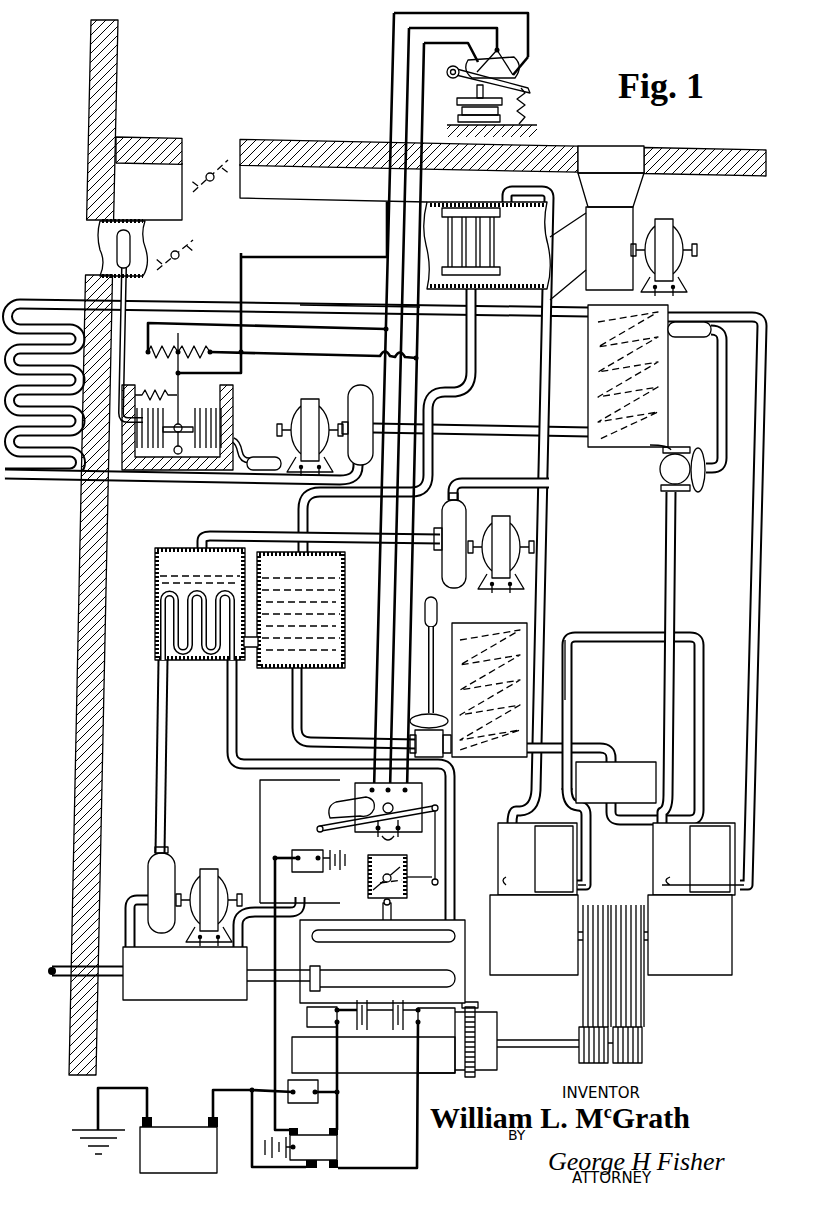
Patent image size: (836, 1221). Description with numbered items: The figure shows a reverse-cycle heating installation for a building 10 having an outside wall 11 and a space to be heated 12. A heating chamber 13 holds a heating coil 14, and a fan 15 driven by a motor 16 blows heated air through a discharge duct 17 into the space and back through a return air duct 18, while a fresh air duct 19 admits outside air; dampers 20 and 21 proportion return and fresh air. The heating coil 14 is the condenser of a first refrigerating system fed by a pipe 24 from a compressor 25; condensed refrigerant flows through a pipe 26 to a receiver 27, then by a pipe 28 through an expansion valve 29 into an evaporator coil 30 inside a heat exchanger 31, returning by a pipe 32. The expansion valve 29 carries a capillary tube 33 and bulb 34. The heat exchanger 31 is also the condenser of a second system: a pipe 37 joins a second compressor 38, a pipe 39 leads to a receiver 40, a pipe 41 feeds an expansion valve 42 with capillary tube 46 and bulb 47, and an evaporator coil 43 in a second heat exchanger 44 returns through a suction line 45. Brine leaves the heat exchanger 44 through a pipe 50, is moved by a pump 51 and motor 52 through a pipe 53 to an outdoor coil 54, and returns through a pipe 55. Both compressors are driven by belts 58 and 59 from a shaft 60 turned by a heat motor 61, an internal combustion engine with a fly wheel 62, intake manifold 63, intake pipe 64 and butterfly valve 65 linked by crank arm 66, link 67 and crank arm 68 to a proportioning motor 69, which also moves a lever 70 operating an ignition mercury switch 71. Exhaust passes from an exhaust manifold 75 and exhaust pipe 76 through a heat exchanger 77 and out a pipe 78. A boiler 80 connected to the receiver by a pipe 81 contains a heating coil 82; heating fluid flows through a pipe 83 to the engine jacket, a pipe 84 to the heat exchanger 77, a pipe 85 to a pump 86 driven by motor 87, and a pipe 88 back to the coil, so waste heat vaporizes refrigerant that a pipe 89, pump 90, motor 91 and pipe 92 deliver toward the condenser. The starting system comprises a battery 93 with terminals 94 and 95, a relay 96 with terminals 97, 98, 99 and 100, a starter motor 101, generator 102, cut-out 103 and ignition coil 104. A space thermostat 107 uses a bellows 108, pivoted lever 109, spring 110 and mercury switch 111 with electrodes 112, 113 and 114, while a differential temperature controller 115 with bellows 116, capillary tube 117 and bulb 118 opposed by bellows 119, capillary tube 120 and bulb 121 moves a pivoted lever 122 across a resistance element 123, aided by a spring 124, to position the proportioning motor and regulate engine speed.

The building 10 is at (50, 102).
The outside wall 11 is at (90, 196).
The space to be heated 12 is at (441, 127).
The heating chamber 13 is at (336, 204).
The heating coil 14 is at (485, 249).
The fan 15 is at (591, 253).
The motor 16 is at (684, 240).
The discharge duct 17 is at (620, 152).
The return air duct 18 is at (240, 181).
The fresh air duct 19 is at (92, 246).
The damper 20 is at (195, 185).
The damper 21 is at (166, 236).
The pipe 24 is at (543, 362).
The compressor 25 is at (538, 899).
The pipe 26 is at (468, 392).
The receiver 27 is at (338, 622).
The pipe 28 is at (306, 700).
The expansion valve 29 is at (438, 760).
The evaporator coil 30 is at (490, 752).
The heat exchanger 31 is at (476, 624).
The pipe 32 is at (567, 678).
The capillary tube 33 is at (428, 690).
The bulb 34 is at (430, 597).
The pipe 37 is at (610, 632).
The second compressor 38 is at (696, 899).
The pipe 39 is at (588, 744).
The receiver 40 is at (616, 782).
The pipe 41 is at (667, 575).
The expansion valve 42 is at (660, 470).
The evaporator coil 43 is at (662, 412).
The second heat exchanger 44 is at (604, 447).
The suction line 45 is at (752, 496).
The capillary tube 46 is at (722, 426).
The bulb 47 is at (692, 338).
The pipe 50 is at (495, 428).
The pump 51 is at (358, 384).
The motor 52 is at (308, 398).
The pipe 53 is at (190, 480).
The coil 54 is at (16, 302).
The pipe 55 is at (296, 304).
The belt 58 is at (590, 996).
The belt 59 is at (636, 996).
The shaft 60 is at (534, 1038).
The heat motor 61 is at (382, 961).
The fly wheel 62 is at (498, 1056).
The intake manifold 63 is at (416, 940).
The intake pipe 64 is at (374, 908).
The butterfly valve 65 is at (370, 884).
The crank arm 66 is at (418, 892).
The link 67 is at (428, 866).
The crank arm 68 is at (420, 808).
The proportioning motor 69 is at (398, 836).
The lever 70 is at (333, 826).
The mercury switch 71 is at (330, 812).
The exhaust manifold 75 is at (348, 970).
The exhaust pipe 76 is at (290, 988).
The heat exchanger 77 is at (185, 973).
The pipe 78 is at (58, 966).
The boiler 80 is at (152, 566).
The pipe 81 is at (248, 652).
The heating coil 82 is at (162, 635).
The pipe 83 is at (227, 722).
The pipe 84 is at (310, 902).
The pipe 85 is at (136, 896).
The pump 86 is at (146, 866).
The motor 87 is at (208, 870).
The pipe 88 is at (156, 766).
The pipe 89 is at (230, 534).
The pump 90 is at (444, 521).
The motor 91 is at (499, 524).
The pipe 92 is at (488, 482).
The storage battery 93 is at (189, 1131).
The negative ground terminal 94 is at (150, 1118).
The positive terminal 95 is at (210, 1117).
The relay 96 is at (340, 1140).
The terminal 97 is at (292, 1128).
The terminal 98 is at (310, 1168).
The terminal 99 is at (335, 1168).
The terminal 100 is at (336, 1126).
The starter motor 101 is at (428, 1034).
The generator 102 is at (322, 1030).
The cut-out 103 is at (300, 1090).
The ignition coil 104 is at (316, 848).
The space thermostat 107 is at (548, 97).
The bellows 108 is at (459, 104).
The pivoted lever 109 is at (456, 79).
The spring 110 is at (526, 104).
The mercury switch 111 is at (522, 74).
The end electrode 112 is at (526, 58).
The end electrode 113 is at (468, 56).
The common electrodes 114 is at (498, 46).
The differential temperature controller 115 is at (233, 404).
The bellows 116 is at (196, 408).
The capillary tube 117 is at (238, 442).
The bulb 118 is at (252, 458).
The bellows 119 is at (148, 448).
The capillary tube 120 is at (130, 343).
The bulb 121 is at (128, 272).
The pivoted lever 122 is at (172, 364).
The resistance element 123 is at (186, 350).
The spring 124 is at (146, 392).